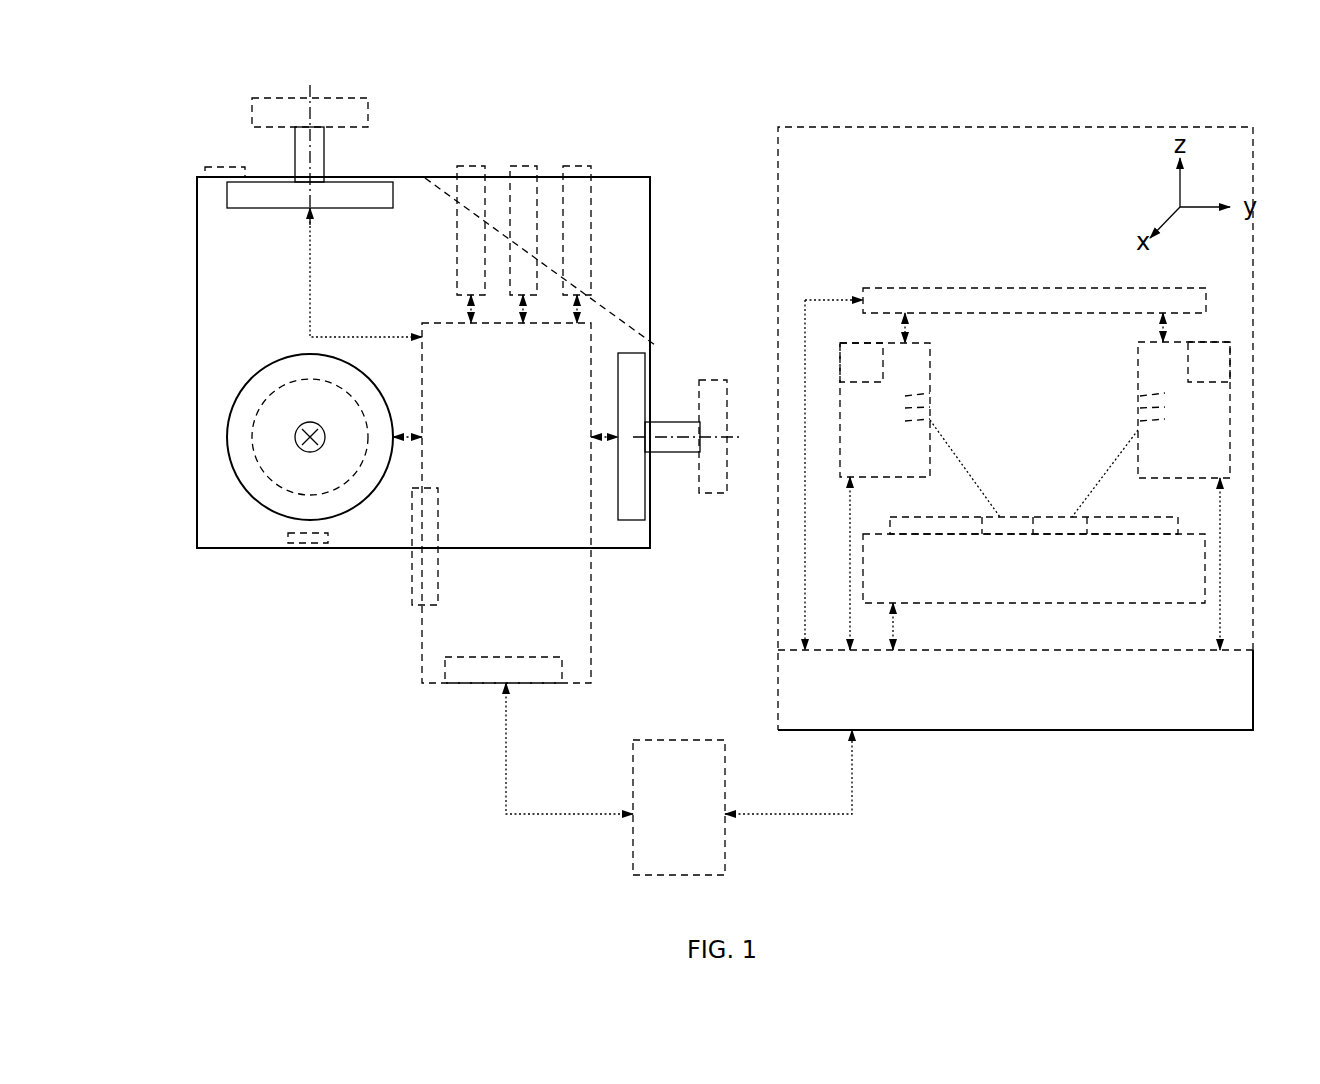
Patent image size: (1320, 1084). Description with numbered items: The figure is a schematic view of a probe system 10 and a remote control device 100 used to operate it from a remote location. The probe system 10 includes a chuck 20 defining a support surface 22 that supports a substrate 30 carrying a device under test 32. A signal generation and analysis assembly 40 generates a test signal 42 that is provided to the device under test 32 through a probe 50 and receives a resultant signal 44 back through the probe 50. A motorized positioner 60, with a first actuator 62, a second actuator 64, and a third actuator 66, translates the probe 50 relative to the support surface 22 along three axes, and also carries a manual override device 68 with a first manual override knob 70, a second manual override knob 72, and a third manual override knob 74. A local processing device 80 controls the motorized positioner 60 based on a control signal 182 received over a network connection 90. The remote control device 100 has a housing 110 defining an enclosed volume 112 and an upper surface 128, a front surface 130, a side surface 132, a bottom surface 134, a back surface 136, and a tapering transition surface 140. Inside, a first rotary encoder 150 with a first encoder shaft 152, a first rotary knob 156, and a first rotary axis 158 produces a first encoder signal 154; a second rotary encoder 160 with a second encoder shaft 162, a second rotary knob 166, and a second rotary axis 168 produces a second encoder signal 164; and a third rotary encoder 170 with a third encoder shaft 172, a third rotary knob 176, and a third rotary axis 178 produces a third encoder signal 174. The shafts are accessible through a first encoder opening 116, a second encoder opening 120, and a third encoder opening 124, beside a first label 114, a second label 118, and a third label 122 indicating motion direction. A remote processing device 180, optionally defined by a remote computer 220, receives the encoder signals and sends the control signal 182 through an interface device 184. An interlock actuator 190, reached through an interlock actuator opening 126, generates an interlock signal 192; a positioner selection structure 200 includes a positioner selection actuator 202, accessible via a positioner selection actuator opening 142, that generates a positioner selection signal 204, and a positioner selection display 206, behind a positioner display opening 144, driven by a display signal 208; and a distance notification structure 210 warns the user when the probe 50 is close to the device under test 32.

The probe system 10 is at (1175, 835).
The chuck 20 is at (1105, 606).
The support surface 22 is at (880, 531).
The substrate 30 is at (948, 515).
The device under test 32 is at (1033, 528).
The signal generation and analysis assembly 40 is at (898, 286).
The test signal 42 is at (905, 328).
The resultant signal 44 is at (885, 333).
The probe 50 is at (974, 484).
The motorized positioner 60 is at (932, 372).
The first actuator 62 is at (920, 396).
The second actuator 64 is at (920, 410).
The third actuator 66 is at (930, 422).
The manual override device 68 is at (850, 345).
The first manual override knob 70 is at (850, 360).
The second manual override knob 72 is at (845, 378).
The third manual override knob 74 is at (838, 385).
The local processing device 80 is at (776, 699).
The network connection 90 is at (727, 873).
The remote control device 100 is at (172, 750).
The housing 110 is at (250, 552).
The enclosed volume 112 is at (267, 545).
The first label 114 is at (218, 168).
The first encoder opening 116 is at (283, 167).
The second label 118 is at (658, 373).
The second encoder opening 120 is at (652, 538).
The third label 122 is at (290, 535).
The third encoder opening 124 is at (296, 456).
The interlock actuator opening 126 is at (555, 165).
The upper surface 128 is at (424, 177).
The front surface 130 is at (652, 552).
The side surface 132 is at (218, 297).
The bottom surface 134 is at (375, 550).
The back surface 136 is at (197, 275).
The transition surface 140 is at (650, 200).
The positioner selection actuator opening 142 is at (502, 165).
The positioner display opening 144 is at (455, 170).
The first rotary encoder 150 is at (245, 210).
The first encoder shaft 152 is at (326, 165).
The first encoder signal 154 is at (310, 285).
The first rotary knob 156 is at (368, 115).
The first rotary axis 158 is at (308, 95).
The second rotary encoder 160 is at (615, 385).
The second encoder shaft 162 is at (673, 422).
The second encoder signal 164 is at (603, 437).
The second rotary knob 166 is at (660, 462).
The second rotary axis 168 is at (718, 440).
The third rotary encoder 170 is at (228, 412).
The third encoder shaft 172 is at (296, 437).
The third encoder signal 174 is at (406, 437).
The third rotary knob 176 is at (265, 402).
The third rotary axis 178 is at (285, 480).
The remote processing device 180 is at (592, 623).
The control signal 182 is at (505, 755).
The interface device 184 is at (506, 657).
The interlock actuator 190 is at (575, 165).
The interlock signal 192 is at (645, 330).
The positioner selection structure 200 is at (487, 112).
The positioner selection actuator 202 is at (517, 165).
The positioner selection signal 204 is at (522, 318).
The positioner selection display 206 is at (477, 165).
The display signal 208 is at (470, 318).
The distance notification structure 210 is at (412, 590).
The remote computer 220 is at (580, 603).